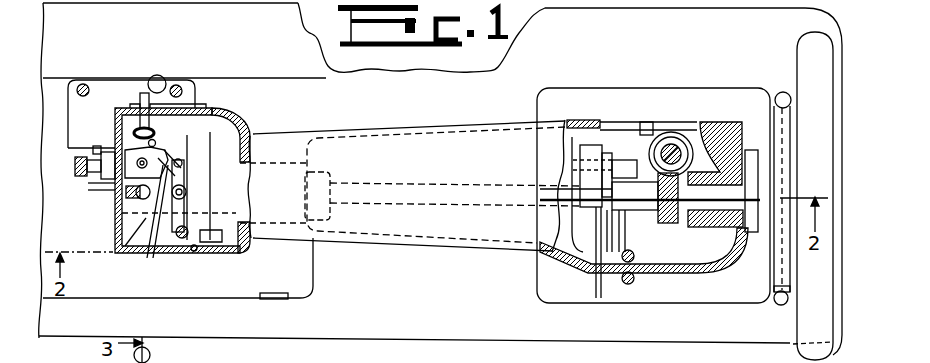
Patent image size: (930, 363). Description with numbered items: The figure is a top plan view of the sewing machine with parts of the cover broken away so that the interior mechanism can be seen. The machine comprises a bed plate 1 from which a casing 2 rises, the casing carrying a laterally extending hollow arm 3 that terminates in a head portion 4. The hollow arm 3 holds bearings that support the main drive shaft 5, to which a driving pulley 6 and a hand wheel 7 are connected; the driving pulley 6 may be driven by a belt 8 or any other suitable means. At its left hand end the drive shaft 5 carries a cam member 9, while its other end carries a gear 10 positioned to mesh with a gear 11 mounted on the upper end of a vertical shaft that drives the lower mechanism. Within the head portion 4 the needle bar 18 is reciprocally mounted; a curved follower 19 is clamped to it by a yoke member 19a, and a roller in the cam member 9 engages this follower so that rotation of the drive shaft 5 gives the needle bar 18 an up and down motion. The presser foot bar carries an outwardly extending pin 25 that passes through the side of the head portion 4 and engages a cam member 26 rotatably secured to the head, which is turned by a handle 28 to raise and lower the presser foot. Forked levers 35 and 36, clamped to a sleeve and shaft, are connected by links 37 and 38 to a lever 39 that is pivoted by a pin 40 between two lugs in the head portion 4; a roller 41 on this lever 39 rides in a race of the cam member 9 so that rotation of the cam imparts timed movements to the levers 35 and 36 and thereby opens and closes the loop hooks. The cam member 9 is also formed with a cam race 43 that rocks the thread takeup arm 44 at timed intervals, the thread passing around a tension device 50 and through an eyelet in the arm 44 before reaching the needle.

The bed plate 1 is at (242, 271).
The casing 2 is at (605, 88).
The hollow arm 3 is at (422, 127).
The head portion 4 is at (244, 249).
The main drive shaft 5 is at (455, 180).
The driving pulley 6 is at (777, 95).
The hand wheel 7 is at (804, 50).
The belt 8 is at (786, 93).
The cam member 9 is at (255, 197).
The gear 10 is at (665, 224).
The gear 11 is at (673, 132).
The needle bar 18 is at (122, 250).
The curved follower 19 is at (154, 216).
The yoke member 19a is at (137, 196).
The pin 25 is at (141, 127).
The cam member 26 is at (176, 85).
The handle 28 is at (160, 75).
The forked lever 35 is at (150, 148).
The forked lever 36 is at (115, 182).
The link 37 is at (175, 148).
The link 38 is at (178, 160).
The lever 39 is at (195, 172).
The pin 40 is at (181, 240).
The roller 41 is at (236, 176).
The cam race 43 is at (247, 137).
The thread takeup arm 44 is at (195, 252).
The tension device 50 is at (95, 148).